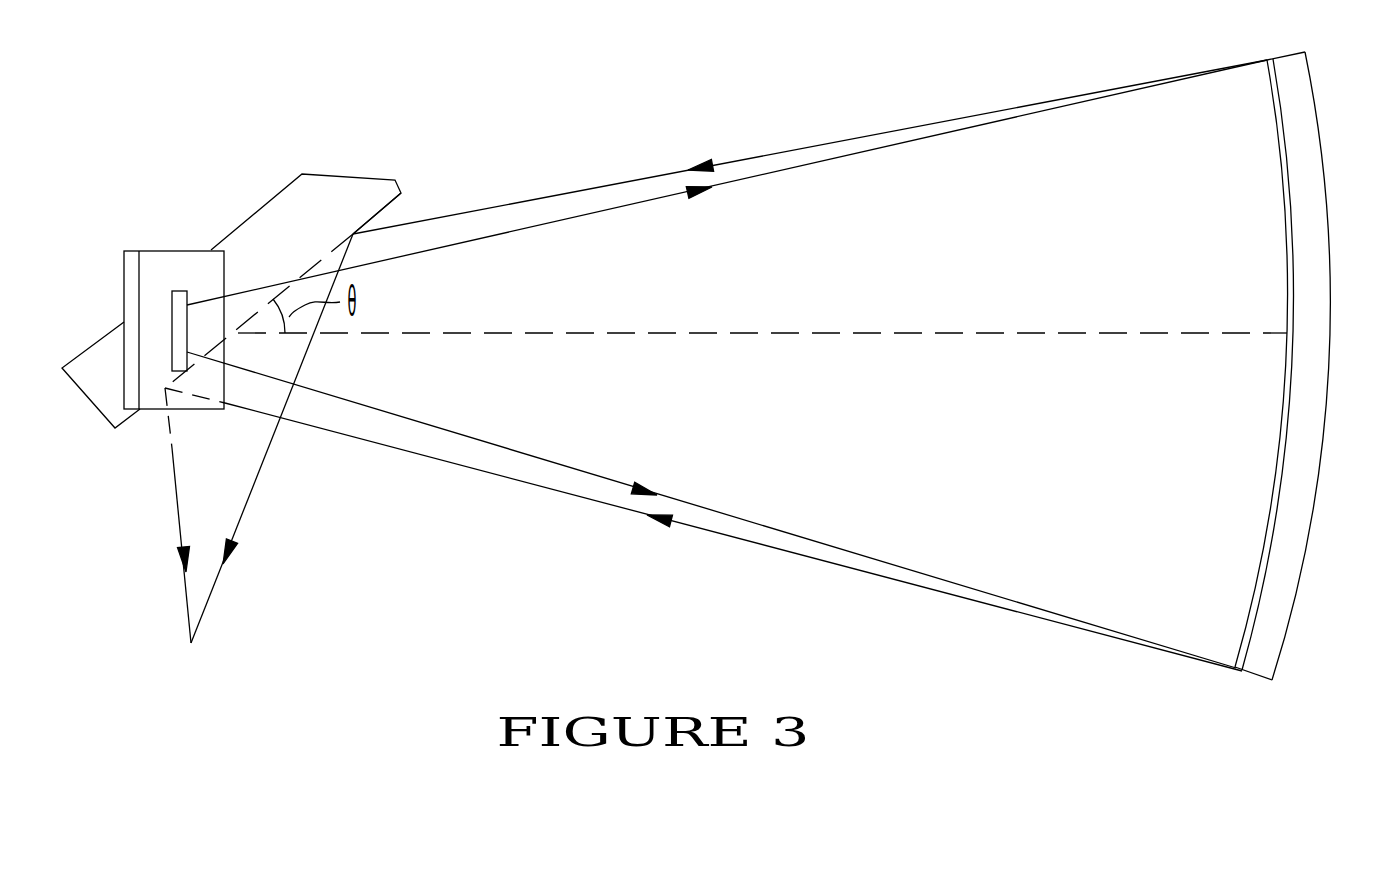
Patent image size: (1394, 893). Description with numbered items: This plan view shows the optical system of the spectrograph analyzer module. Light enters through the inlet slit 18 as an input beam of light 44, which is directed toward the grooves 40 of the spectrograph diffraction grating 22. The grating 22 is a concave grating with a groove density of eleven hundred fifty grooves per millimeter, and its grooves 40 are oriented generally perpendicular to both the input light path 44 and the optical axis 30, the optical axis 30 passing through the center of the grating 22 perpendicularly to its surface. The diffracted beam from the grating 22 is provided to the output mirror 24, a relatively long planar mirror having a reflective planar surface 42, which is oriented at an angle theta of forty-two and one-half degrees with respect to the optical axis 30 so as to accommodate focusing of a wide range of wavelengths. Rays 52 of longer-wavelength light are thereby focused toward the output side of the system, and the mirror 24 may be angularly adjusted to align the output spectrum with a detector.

The slit 18 is at (170, 307).
The output mirror 24 is at (370, 178).
The reflective planar surface 42 is at (388, 208).
The input beam of light 44 is at (603, 212).
The optical axis 30 is at (794, 325).
The rays of light of longer wavelengths 52 is at (178, 513).
The spectrograph diffraction grating 22 is at (1313, 101).
The grooves 40 is at (1284, 207).